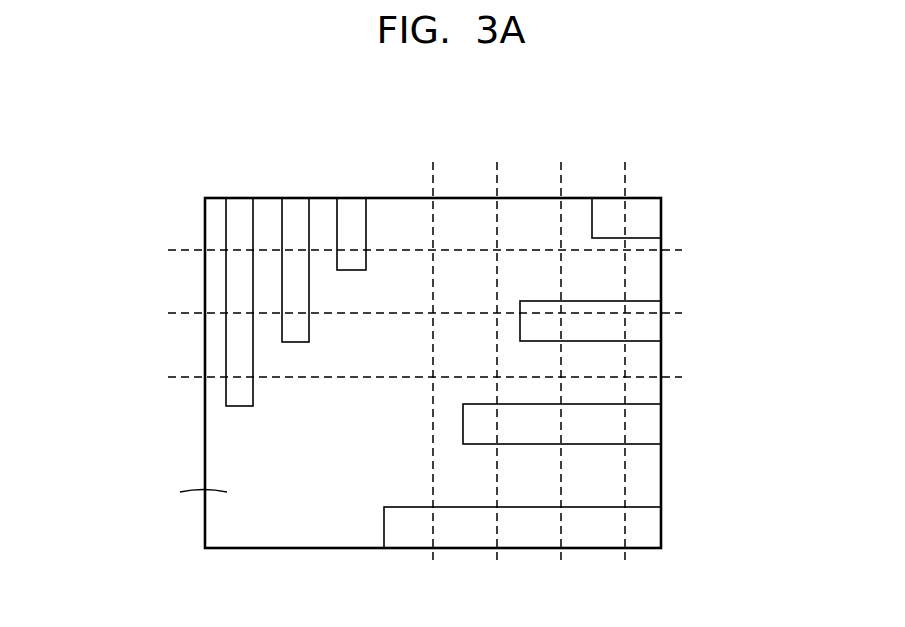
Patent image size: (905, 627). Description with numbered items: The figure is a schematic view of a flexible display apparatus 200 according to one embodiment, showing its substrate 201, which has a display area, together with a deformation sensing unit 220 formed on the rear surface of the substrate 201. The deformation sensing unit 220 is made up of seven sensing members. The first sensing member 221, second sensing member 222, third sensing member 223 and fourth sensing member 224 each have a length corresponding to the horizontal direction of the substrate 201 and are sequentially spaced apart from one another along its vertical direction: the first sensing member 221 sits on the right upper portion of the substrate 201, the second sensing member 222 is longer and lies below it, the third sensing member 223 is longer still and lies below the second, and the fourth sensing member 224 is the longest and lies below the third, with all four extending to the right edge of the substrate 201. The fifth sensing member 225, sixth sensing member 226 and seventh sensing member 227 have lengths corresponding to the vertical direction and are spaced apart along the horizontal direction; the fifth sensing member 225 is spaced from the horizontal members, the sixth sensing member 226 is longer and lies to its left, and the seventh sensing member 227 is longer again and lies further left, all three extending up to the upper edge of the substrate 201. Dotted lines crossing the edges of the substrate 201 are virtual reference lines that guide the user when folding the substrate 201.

The flexible display apparatus 200 is at (155, 145).
The substrate 201 is at (268, 550).
The deformation sensing unit 220 is at (222, 132).
The first sensing member 221 is at (652, 217).
The second sensing member 222 is at (652, 327).
The third sensing member 223 is at (652, 427).
The fourth sensing member 224 is at (652, 530).
The fifth sensing member 225 is at (353, 206).
The sixth sensing member 226 is at (296, 206).
The seventh sensing member 227 is at (239, 206).